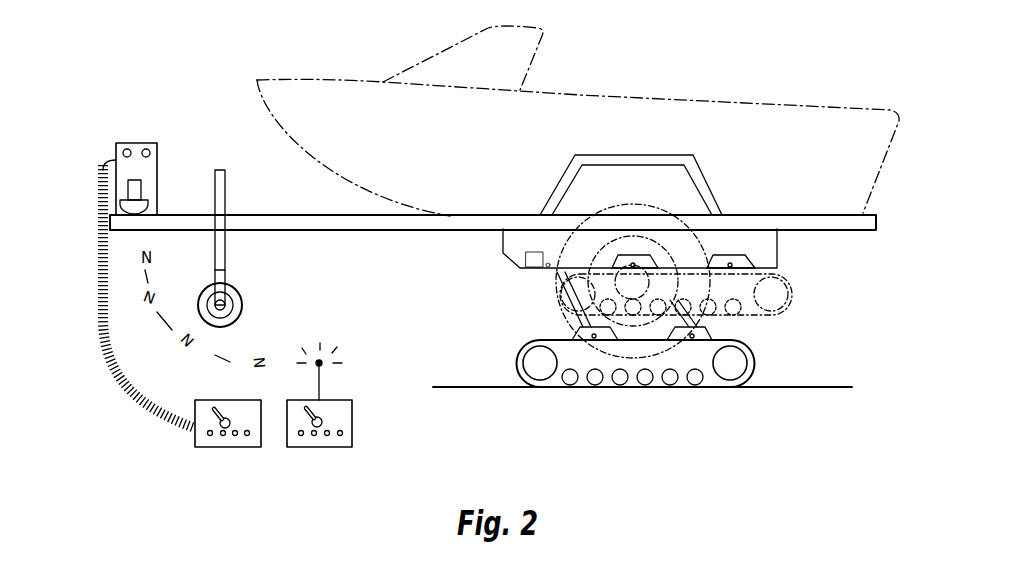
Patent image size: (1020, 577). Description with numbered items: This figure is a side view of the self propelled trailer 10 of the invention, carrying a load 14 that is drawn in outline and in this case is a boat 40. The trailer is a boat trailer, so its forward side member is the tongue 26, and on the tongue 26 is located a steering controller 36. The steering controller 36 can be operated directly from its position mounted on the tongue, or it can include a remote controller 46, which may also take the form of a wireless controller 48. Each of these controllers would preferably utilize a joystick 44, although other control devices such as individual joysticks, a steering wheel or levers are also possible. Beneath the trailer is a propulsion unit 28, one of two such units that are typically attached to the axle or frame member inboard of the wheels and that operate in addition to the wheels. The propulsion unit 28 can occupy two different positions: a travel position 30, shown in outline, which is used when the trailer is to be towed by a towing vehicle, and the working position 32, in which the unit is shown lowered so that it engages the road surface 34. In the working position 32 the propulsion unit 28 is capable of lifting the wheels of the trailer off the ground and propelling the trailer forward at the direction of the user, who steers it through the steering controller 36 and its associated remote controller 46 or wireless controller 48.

The self propelled trailer 10 is at (182, 27).
The load 14 is at (260, 97).
The tongue 26 is at (178, 230).
The propulsion unit 28 is at (535, 338).
The travel position 30 is at (793, 293).
The working position 32 is at (732, 395).
The road surface 34 is at (473, 387).
The steering controller 36 is at (118, 143).
The boat 40 is at (717, 107).
The joystick 44 is at (352, 415).
The remote controller 46 is at (225, 447).
The wireless controller 48 is at (319, 447).